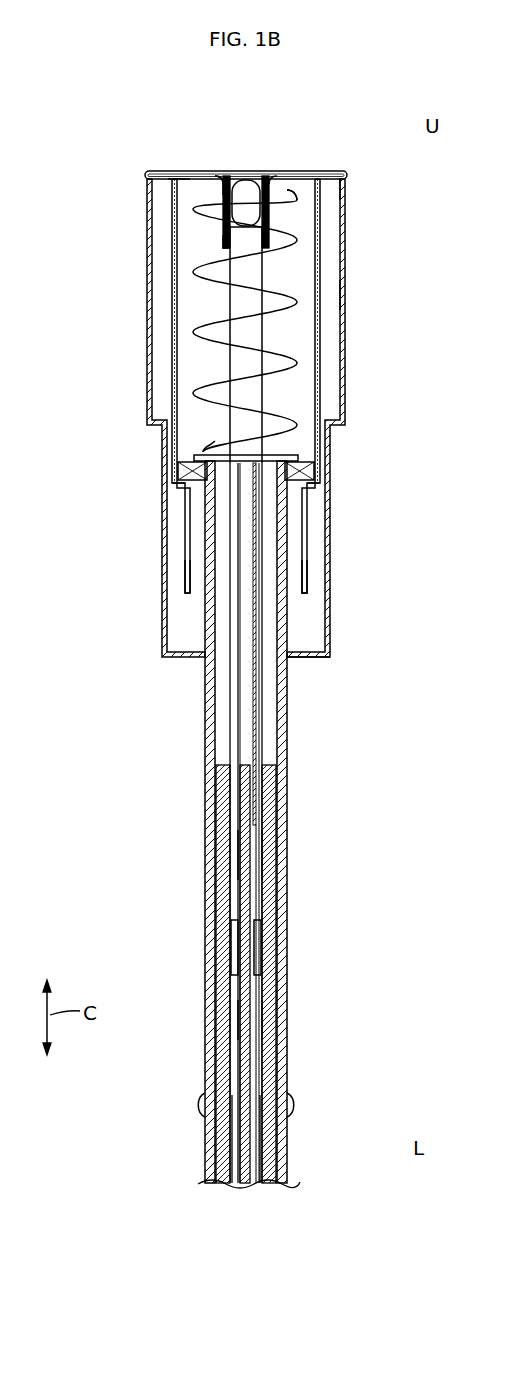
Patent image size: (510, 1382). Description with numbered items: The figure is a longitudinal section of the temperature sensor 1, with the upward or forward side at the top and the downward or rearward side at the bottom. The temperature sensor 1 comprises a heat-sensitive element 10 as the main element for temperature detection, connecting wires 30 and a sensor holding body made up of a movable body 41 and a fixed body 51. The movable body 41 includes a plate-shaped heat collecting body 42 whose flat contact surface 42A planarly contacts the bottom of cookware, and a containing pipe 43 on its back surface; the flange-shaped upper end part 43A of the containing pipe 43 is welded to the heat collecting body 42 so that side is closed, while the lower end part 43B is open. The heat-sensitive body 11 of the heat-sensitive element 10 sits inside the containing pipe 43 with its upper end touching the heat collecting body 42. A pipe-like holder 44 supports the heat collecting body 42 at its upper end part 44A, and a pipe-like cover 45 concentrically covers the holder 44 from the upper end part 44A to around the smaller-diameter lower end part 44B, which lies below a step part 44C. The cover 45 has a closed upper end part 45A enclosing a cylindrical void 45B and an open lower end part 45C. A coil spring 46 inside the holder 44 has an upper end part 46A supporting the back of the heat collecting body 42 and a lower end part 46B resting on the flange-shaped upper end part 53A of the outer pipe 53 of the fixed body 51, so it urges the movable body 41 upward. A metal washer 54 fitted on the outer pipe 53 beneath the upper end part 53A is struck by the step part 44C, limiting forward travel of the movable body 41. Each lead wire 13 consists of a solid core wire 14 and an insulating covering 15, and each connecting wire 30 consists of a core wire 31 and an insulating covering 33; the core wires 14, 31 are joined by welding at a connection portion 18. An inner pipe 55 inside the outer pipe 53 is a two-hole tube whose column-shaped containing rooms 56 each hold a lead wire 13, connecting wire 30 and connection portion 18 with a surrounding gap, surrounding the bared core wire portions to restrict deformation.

The temperature sensor 1 is at (352, 149).
The heat-sensitive element 10 is at (273, 212).
The heat-sensitive body 11 is at (241, 172).
The lead wire 13 is at (239, 546).
The core wire 14 is at (239, 868).
The insulating covering 15 is at (250, 760).
The connection portion 18 is at (238, 956).
The connecting wire 30 is at (241, 1137).
The core wire 31 is at (239, 1032).
The insulating covering 33 is at (253, 1172).
The movable body 41 is at (142, 325).
The heat collecting body 42 is at (348, 176).
The contact surface 42A is at (176, 172).
The containing pipe 43 is at (270, 230).
The upper end part 43A is at (220, 178).
The lower end part 43B is at (222, 246).
The holder 44 is at (316, 556).
The upper end part 44A is at (333, 171).
The lower end part 44B is at (304, 583).
The step part 44C is at (318, 486).
The cover 45 is at (343, 340).
The upper end part 45A is at (346, 184).
The cylindrical void 45B is at (408, 293).
The lower end part 45C is at (326, 660).
The coil spring 46 is at (280, 346).
The upper end part 46A is at (292, 188).
The lower end part 46B is at (207, 452).
The fixed body 51 is at (198, 857).
The outer pipe 53 is at (286, 896).
The upper end part 53A is at (297, 457).
The metal washer 54 is at (310, 461).
The inner pipe 55 is at (275, 793).
The containing room 56 is at (251, 826).